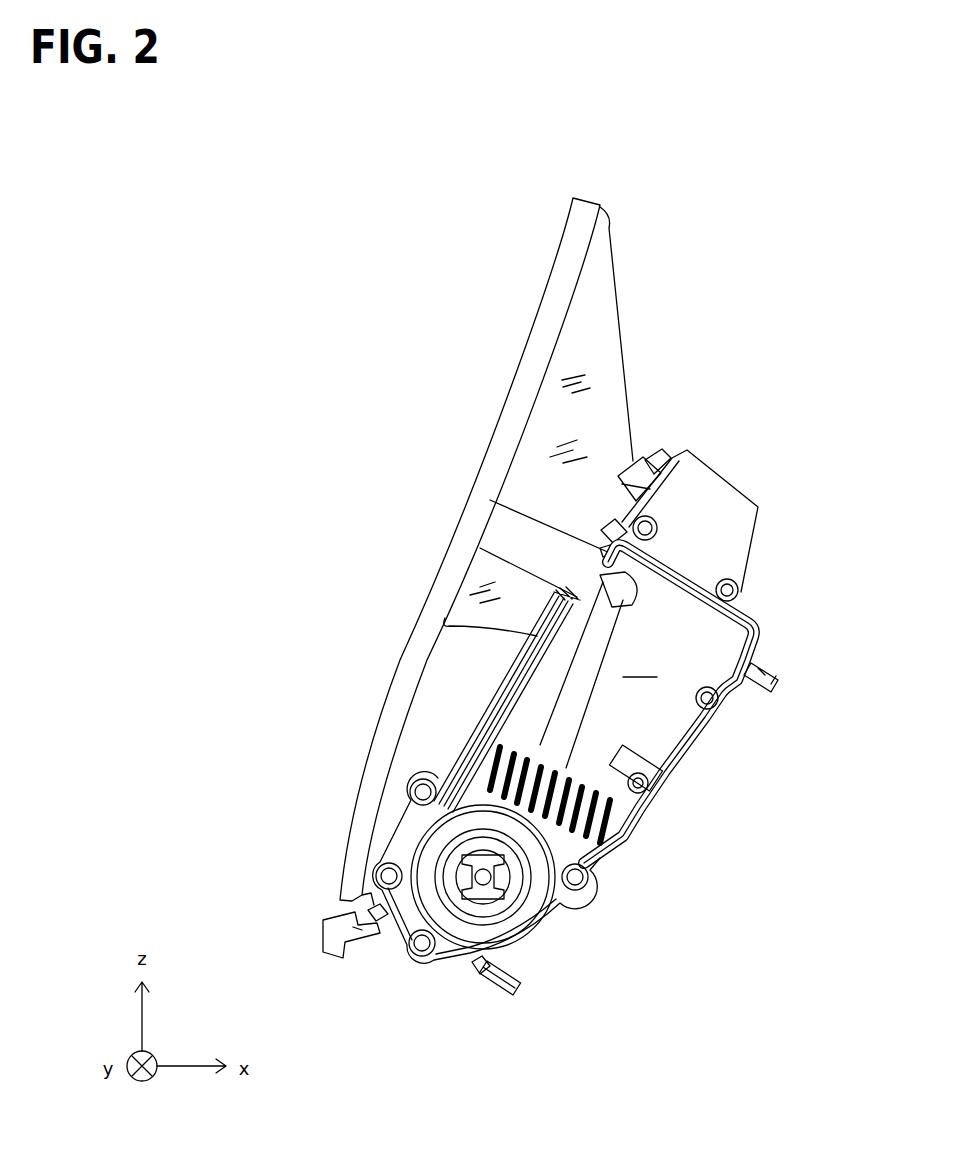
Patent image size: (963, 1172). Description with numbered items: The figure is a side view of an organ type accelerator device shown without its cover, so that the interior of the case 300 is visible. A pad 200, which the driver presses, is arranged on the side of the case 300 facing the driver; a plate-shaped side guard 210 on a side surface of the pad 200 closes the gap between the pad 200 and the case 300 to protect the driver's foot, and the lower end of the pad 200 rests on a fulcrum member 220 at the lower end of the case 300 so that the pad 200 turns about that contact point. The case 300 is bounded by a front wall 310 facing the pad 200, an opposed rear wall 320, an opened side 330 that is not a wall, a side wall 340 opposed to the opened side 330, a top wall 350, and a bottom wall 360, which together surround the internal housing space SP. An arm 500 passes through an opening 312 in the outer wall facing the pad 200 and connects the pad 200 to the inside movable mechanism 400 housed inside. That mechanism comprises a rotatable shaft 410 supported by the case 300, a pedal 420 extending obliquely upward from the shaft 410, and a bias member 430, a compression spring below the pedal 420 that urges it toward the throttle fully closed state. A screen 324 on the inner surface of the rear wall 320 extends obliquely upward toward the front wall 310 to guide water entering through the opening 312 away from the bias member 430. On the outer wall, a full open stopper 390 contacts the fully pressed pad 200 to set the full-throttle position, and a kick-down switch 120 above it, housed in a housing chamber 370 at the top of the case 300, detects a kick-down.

The kick-down switch 120 is at (652, 460).
The pad 200 is at (555, 302).
The side guard 210 is at (598, 316).
The fulcrum member 220 is at (340, 955).
The case 300 is at (765, 494).
The front wall 310 is at (447, 685).
The opening 312 is at (557, 607).
The rear wall 320 is at (735, 704).
The screen 324 is at (605, 752).
The opened side 330 is at (707, 689).
The side wall 340 is at (693, 655).
The top wall 350 is at (687, 592).
The bottom wall 360 is at (400, 922).
The housing chamber 370 is at (714, 495).
The full open stopper 390 is at (610, 520).
The inside movable mechanism 400 is at (612, 868).
The shaft 410 is at (593, 860).
The pedal 420 is at (580, 647).
The bias member 430 is at (630, 827).
The arm 500 is at (500, 530).